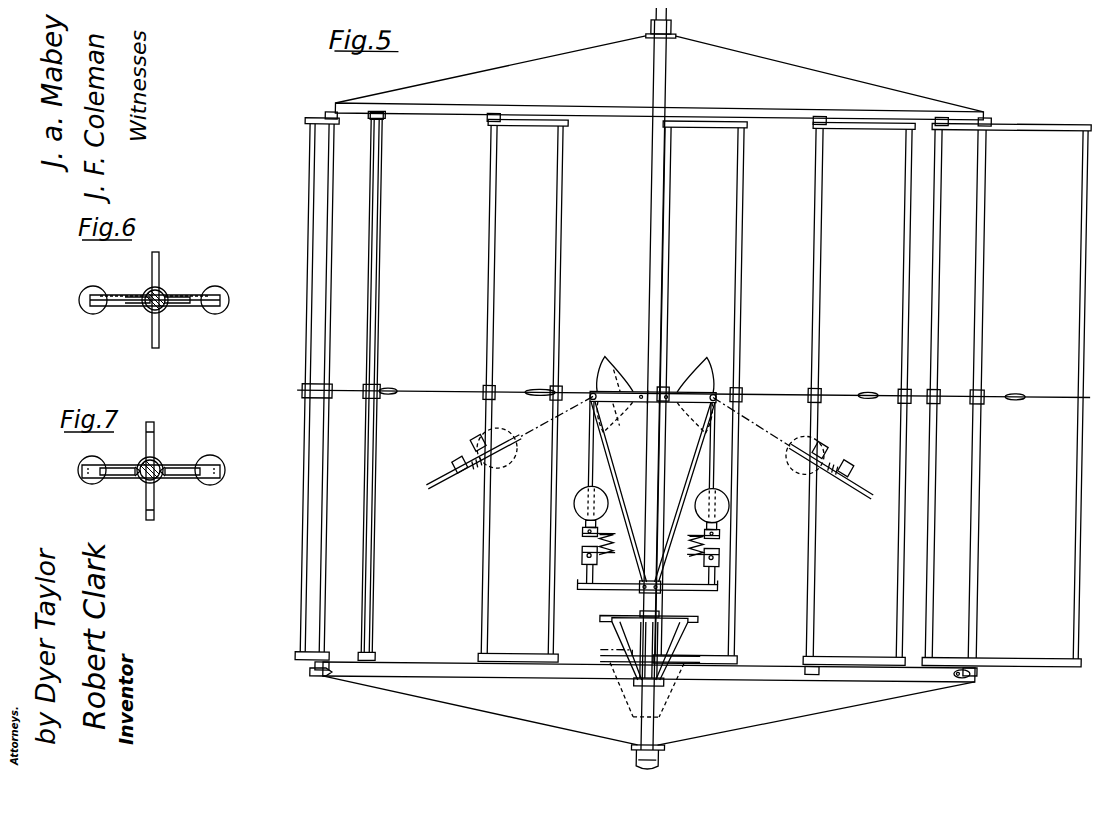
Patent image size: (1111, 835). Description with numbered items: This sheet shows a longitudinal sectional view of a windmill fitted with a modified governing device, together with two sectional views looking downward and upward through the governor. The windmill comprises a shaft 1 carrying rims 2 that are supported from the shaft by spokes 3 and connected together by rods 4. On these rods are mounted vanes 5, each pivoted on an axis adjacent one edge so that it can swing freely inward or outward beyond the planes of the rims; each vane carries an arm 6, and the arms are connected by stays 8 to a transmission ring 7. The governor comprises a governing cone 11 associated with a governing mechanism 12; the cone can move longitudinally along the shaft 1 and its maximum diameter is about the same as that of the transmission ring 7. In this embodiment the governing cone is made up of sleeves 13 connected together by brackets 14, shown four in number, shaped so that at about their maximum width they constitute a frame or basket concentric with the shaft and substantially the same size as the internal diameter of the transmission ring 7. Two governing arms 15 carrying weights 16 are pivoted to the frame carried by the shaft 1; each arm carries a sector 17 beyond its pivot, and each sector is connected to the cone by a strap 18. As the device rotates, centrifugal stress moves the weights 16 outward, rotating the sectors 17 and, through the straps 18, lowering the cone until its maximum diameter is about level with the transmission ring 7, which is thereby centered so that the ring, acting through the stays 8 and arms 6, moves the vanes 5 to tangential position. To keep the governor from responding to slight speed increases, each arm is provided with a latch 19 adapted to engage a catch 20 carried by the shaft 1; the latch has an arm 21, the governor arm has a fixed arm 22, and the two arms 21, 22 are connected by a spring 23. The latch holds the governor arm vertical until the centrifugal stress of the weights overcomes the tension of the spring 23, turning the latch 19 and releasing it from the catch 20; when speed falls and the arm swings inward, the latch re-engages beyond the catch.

In FIG. 5, the shaft 1 is at (660, 302).
In FIG. 6, the shaft 1 is at (163, 293).
In FIG. 7, the shaft 1 is at (142, 480).
In FIG. 5, the rim 2 is at (591, 107).
In FIG. 5, the spoke 3 is at (715, 352).
In FIG. 5, the rod 4 is at (491, 115).
In FIG. 5, the vane 5 is at (308, 346).
In FIG. 5, the arm 6 is at (333, 668).
In FIG. 5, the transmission ring 7 is at (711, 657).
In FIG. 5, the stay 8 is at (441, 665).
In FIG. 5, the governing cone 11 is at (617, 646).
In FIG. 7, the governing cone 11 is at (151, 457).
In FIG. 5, the governing mechanism 12 is at (652, 423).
In FIG. 6, the governing mechanism 12 is at (155, 312).
In FIG. 7, the governing mechanism 12 is at (163, 481).
In FIG. 5, the sleeve 13 is at (657, 597).
In FIG. 6, the sleeve 13 is at (148, 312).
In FIG. 7, the sleeve 13 is at (158, 480).
In FIG. 5, the bracket 14 is at (690, 640).
In FIG. 6, the bracket 14 is at (159, 256).
In FIG. 7, the bracket 14 is at (156, 434).
In FIG. 5, the governing arm 15 is at (595, 462).
In FIG. 5, the weight 16 is at (601, 492).
In FIG. 6, the weight 16 is at (154, 288).
In FIG. 7, the weight 16 is at (159, 463).
In FIG. 5, the sector 17 is at (601, 368).
In FIG. 6, the sector 17 is at (106, 298).
In FIG. 5, the strap 18 is at (636, 441).
In FIG. 5, the latch 19 is at (597, 577).
In FIG. 5, the catch 20 is at (583, 591).
In FIG. 7, the catch 20 is at (222, 472).
In FIG. 5, the latch arm 21 is at (585, 561).
In FIG. 5, the fixed arm 22 is at (608, 534).
In FIG. 5, the spring 23 is at (585, 542).